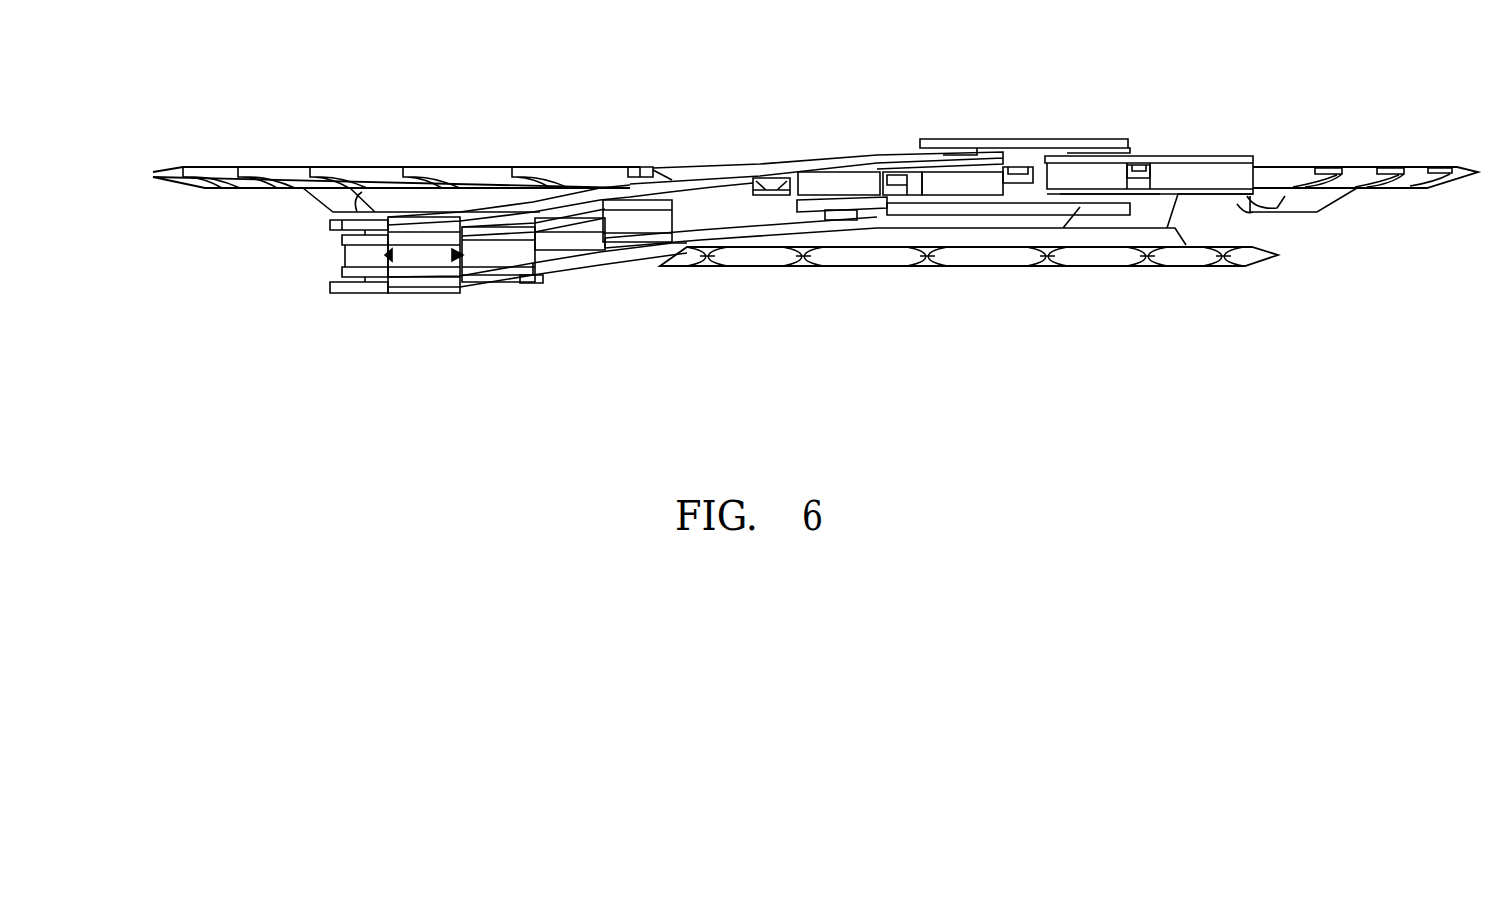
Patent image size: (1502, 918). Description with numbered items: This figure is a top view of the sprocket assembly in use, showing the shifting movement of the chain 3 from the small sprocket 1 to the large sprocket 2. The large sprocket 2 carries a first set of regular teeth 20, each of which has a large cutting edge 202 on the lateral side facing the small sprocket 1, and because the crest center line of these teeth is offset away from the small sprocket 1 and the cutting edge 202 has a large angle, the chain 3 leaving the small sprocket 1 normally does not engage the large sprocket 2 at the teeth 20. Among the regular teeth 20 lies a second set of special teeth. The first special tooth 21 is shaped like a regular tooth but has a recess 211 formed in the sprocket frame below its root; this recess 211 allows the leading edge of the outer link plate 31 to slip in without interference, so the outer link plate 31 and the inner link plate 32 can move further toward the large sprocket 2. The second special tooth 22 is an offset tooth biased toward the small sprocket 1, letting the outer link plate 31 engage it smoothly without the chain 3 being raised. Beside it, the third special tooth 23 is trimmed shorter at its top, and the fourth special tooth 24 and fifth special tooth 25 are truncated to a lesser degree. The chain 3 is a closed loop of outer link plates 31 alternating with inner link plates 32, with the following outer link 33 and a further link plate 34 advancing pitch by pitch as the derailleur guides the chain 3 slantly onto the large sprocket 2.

The small sprocket 1 is at (1180, 260).
The large sprocket 2 is at (1280, 172).
The first set of teeth 20 is at (425, 172).
The large cutting edge 202 is at (508, 182).
The recess 211 is at (603, 190).
The first special tooth 21 is at (648, 176).
The second special tooth 22 is at (770, 182).
The third special tooth 23 is at (895, 177).
The fourth special tooth 24 is at (1017, 172).
The fifth special tooth 25 is at (1140, 170).
The chain 3 is at (352, 260).
The outer link plate 31 is at (595, 272).
The inner link plate 32 is at (668, 228).
The following outer link 33 is at (768, 232).
The link plate 34 is at (900, 203).